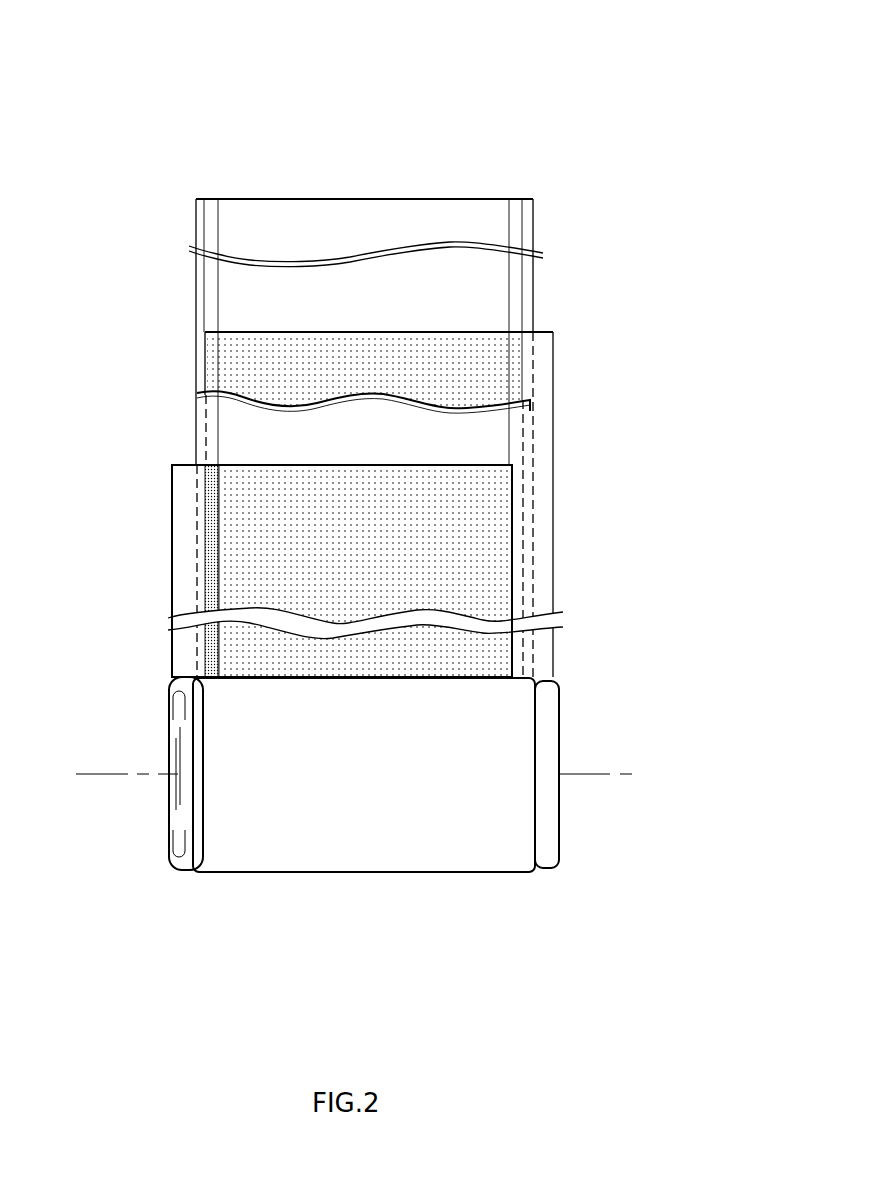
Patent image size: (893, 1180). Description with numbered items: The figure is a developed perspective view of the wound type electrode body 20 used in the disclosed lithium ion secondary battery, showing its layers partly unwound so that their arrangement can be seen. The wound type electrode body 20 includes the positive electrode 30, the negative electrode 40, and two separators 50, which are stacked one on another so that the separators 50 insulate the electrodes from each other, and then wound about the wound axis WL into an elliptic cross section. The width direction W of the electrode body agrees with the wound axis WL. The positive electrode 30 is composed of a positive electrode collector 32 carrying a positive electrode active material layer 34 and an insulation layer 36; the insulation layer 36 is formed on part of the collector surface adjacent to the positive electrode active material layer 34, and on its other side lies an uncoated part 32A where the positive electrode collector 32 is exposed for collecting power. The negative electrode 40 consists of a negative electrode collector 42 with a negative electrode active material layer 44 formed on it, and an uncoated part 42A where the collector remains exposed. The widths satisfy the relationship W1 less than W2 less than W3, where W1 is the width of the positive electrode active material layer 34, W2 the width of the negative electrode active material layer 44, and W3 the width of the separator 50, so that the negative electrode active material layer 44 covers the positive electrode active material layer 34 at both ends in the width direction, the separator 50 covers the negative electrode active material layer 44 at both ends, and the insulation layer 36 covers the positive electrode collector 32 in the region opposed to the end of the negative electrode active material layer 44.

The wound type electrode body 20 is at (590, 168).
The positive electrode 30 is at (345, 668).
The positive electrode collector 32 is at (308, 571).
The uncoated part 32A is at (183, 603).
The positive electrode active material layer 34 is at (250, 560).
The insulation layer 36 is at (208, 578).
The negative electrode 40 is at (435, 479).
The negative electrode collector 42 is at (555, 512).
The uncoated part 42A is at (543, 460).
The negative electrode active material layer 44 is at (458, 362).
The separator 50 is at (196, 302).
The width direction W is at (335, 973).
The width of the positive electrode active material layer W1 is at (218, 103).
The width of the negative electrode active material layer W2 is at (204, 60).
The width of the separator W3 is at (196, 20).
The wound axis WL is at (637, 775).